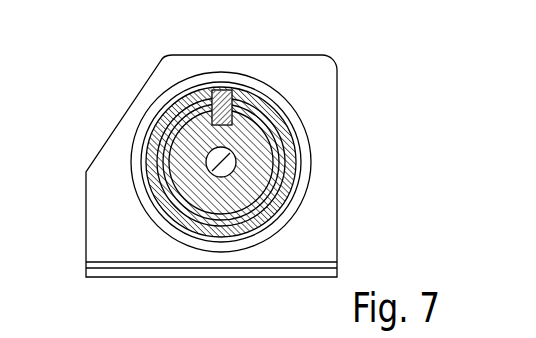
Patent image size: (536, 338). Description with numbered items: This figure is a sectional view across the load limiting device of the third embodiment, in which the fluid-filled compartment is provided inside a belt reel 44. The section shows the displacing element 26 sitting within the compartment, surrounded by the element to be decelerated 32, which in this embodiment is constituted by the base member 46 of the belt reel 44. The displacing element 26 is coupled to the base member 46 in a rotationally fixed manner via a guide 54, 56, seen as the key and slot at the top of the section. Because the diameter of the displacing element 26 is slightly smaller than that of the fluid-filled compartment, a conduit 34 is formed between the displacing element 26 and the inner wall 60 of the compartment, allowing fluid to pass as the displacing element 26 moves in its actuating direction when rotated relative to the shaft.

The displacing element 26 is at (223, 215).
The element to be decelerated 32 is at (283, 162).
The base member 46 is at (285, 190).
The conduit 34 is at (290, 157).
The belt reel 44 is at (145, 132).
The guide 54 is at (243, 105).
The guide 56 is at (218, 92).
The inner wall 60 is at (290, 123).